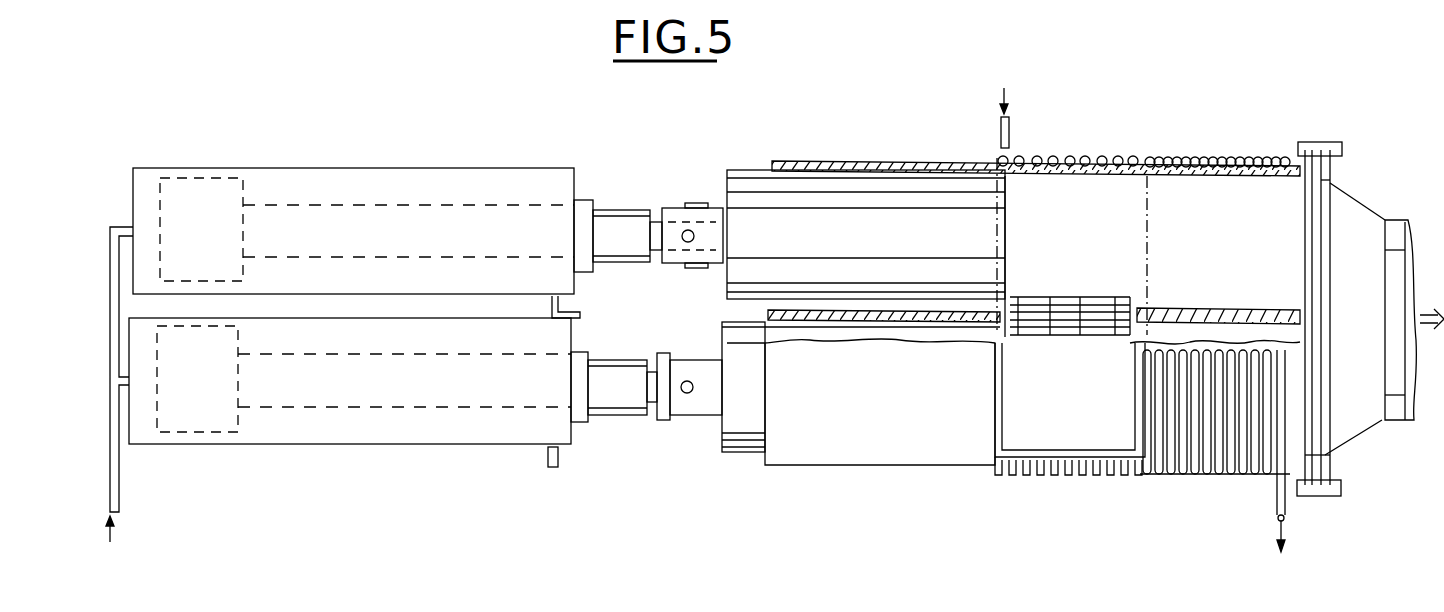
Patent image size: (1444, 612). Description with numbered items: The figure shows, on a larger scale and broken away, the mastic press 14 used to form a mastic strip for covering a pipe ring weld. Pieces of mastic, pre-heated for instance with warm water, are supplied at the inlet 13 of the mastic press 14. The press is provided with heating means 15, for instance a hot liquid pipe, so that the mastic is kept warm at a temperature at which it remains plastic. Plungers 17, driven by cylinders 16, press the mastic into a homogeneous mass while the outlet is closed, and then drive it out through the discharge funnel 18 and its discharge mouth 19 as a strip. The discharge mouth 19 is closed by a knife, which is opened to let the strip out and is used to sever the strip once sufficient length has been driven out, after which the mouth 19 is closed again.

The inlet 13 is at (1132, 438).
The mastic press 14 is at (972, 490).
The heating means 15 is at (1147, 158).
The cylinders 16 is at (349, 330).
The plungers 17 is at (750, 335).
The discharge funnel 18 is at (1349, 385).
The discharge mouth 19 is at (1386, 228).